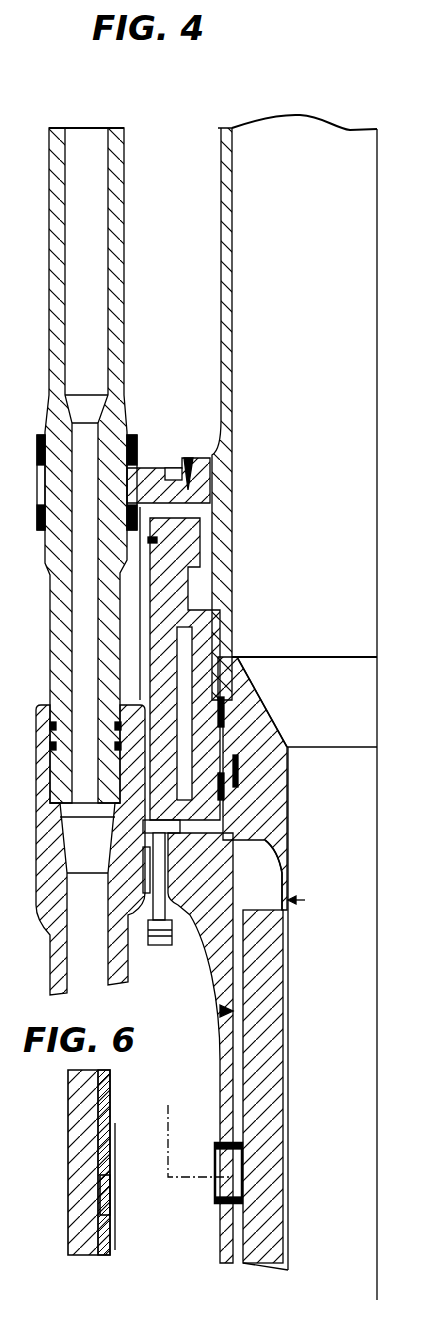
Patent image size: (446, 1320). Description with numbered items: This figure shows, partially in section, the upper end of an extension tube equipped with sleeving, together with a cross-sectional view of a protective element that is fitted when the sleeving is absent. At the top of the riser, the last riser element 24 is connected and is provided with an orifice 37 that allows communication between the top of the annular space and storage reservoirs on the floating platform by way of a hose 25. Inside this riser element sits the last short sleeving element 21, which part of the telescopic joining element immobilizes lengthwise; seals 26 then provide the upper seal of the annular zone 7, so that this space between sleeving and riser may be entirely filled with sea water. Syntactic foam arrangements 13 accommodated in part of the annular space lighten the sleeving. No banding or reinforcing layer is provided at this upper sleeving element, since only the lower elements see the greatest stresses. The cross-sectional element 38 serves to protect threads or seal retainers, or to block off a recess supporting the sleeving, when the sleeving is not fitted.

In FIG. 4, the sealing joints 26 is at (272, 738).
In FIG. 4, the short sleeving element 21 is at (273, 797).
In FIG. 4, the annular zone 7 is at (250, 868).
In FIG. 4, the last riser element 24 is at (226, 1028).
In FIG. 4, the hose 25 is at (168, 1105).
In FIG. 4, the syntactic foam arrangements 13 is at (263, 1112).
In FIG. 4, the orifice 37 is at (228, 1180).
In FIG. 6, the seal insert 38 is at (110, 1186).